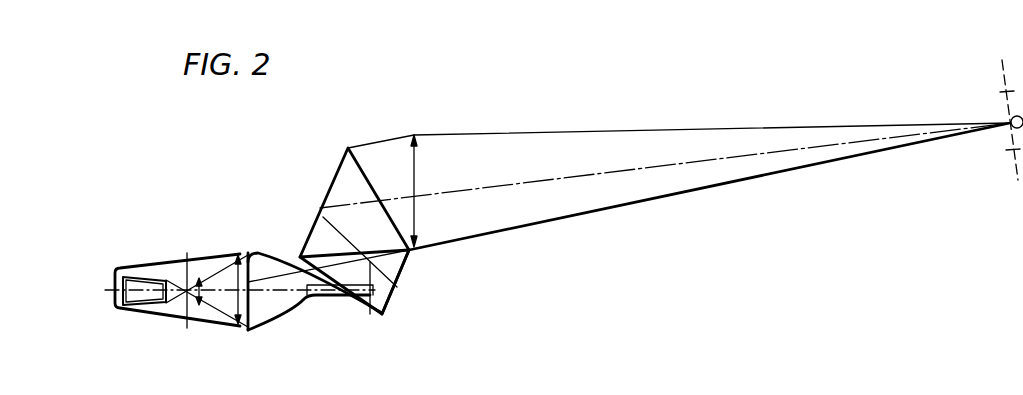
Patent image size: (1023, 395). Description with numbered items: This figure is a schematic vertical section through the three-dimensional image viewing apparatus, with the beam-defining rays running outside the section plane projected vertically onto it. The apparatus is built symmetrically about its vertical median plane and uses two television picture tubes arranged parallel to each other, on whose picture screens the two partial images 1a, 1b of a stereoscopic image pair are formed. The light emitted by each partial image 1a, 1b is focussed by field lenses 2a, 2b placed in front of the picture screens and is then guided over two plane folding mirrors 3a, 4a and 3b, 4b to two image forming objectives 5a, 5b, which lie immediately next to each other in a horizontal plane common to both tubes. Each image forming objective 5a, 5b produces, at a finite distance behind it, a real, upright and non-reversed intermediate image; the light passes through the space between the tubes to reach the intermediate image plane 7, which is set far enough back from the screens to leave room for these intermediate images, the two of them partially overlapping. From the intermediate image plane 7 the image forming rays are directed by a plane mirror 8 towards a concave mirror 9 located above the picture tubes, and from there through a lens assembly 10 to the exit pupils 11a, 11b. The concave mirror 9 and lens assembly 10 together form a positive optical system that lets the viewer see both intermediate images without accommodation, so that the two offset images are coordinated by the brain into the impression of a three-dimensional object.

The partial image 1a is at (328, 297).
The partial image 1b is at (300, 310).
The field lens 2a is at (248, 309).
The field lens 2b is at (242, 328).
The plane folding mirror 3a is at (111, 304).
The plane folding mirror 3b is at (115, 303).
The plane folding mirror 4a is at (176, 306).
The plane folding mirror 4b is at (142, 309).
The image forming objective 5a is at (199, 280).
The image forming objective 5b is at (198, 281).
The intermediate image plane 7 is at (381, 316).
The plane mirror 8 is at (410, 270).
The concave mirror 9 is at (326, 194).
The lens assembly 10 is at (420, 215).
The exit pupil 11a is at (975, 120).
The exit pupil 11b is at (1001, 128).